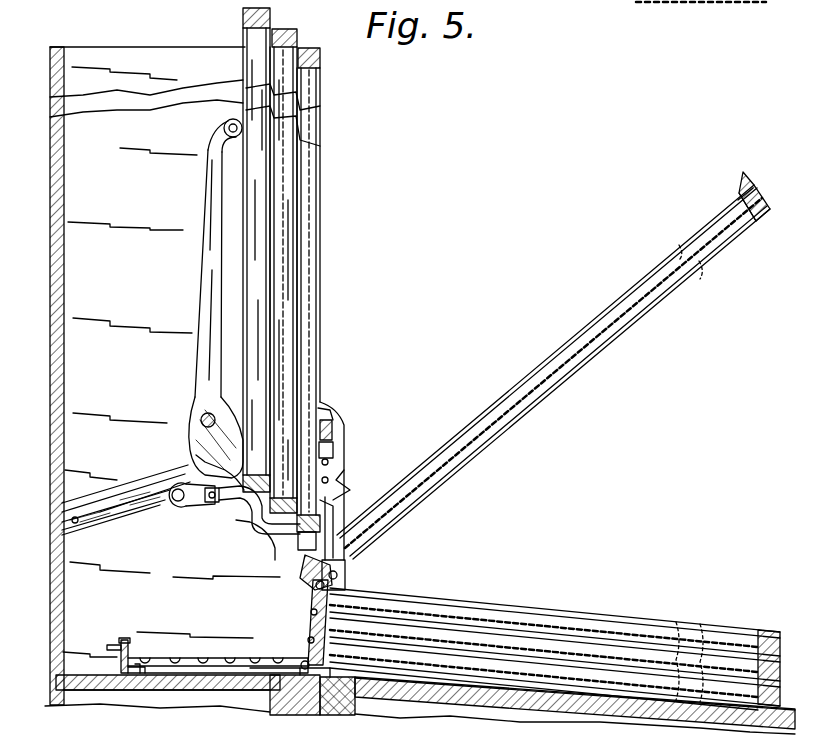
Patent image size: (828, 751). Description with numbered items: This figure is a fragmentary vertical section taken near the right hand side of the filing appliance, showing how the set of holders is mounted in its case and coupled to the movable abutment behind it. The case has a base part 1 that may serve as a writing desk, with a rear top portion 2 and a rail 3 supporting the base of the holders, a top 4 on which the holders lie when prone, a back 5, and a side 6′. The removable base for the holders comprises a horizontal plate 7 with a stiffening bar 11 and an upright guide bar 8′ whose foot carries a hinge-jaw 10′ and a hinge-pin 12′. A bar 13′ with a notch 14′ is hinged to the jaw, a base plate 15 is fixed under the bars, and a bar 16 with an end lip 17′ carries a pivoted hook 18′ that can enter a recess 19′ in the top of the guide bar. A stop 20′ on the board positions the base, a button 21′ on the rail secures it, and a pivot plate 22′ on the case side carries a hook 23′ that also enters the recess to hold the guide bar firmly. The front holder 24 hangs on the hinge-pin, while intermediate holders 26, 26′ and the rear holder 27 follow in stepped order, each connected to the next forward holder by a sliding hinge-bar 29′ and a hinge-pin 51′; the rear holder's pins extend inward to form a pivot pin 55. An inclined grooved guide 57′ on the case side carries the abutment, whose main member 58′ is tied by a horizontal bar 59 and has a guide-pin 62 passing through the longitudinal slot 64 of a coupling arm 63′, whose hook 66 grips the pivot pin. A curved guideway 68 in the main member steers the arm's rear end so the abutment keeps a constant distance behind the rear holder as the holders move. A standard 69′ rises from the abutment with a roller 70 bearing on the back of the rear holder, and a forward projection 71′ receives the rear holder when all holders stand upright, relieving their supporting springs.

The base part 1 is at (232, 706).
The rear top portion 2 is at (190, 690).
The rail 3 is at (295, 716).
The top 4 is at (540, 716).
The back 5 is at (50, 299).
The side 6′ is at (121, 70).
The plate 7 is at (340, 716).
The guide bar 8′ is at (346, 577).
The hinge-jaw 10′ is at (270, 690).
The stiffening bar 11 is at (318, 690).
The hinge-pin 12′ is at (300, 664).
The bar 13′ is at (192, 657).
The notch 14′ is at (206, 658).
The base plate 15 is at (150, 690).
The bar 16 is at (130, 666).
The lip 17′ is at (124, 640).
The hook 18′ is at (107, 648).
The recess 19′ is at (350, 490).
The stop 20′ is at (125, 668).
The button 21′ is at (358, 718).
The pivot plate 22′ is at (338, 462).
The hook 23′ is at (340, 476).
The front holder 24 is at (497, 694).
The intermediate holder 26 is at (582, 626).
The intermediate holder 26′ is at (632, 298).
The rear holder 27 is at (271, 17).
The hinge-bar 29′ is at (300, 562).
The hinge-pin 51′ is at (312, 616).
The pivot pin 55 is at (272, 552).
The grooved guide 57′ is at (124, 490).
The main member 58′ is at (200, 456).
The horizontal bar 59 is at (202, 415).
The guide-pin 62 is at (210, 504).
The arm 63′ is at (205, 506).
The longitudinal slot 64 is at (190, 470).
The hook 66 is at (260, 522).
The curved guideway 68 is at (166, 503).
The standard 69′ is at (212, 190).
The roller 70 is at (224, 127).
The arm or projection 71′ is at (334, 497).